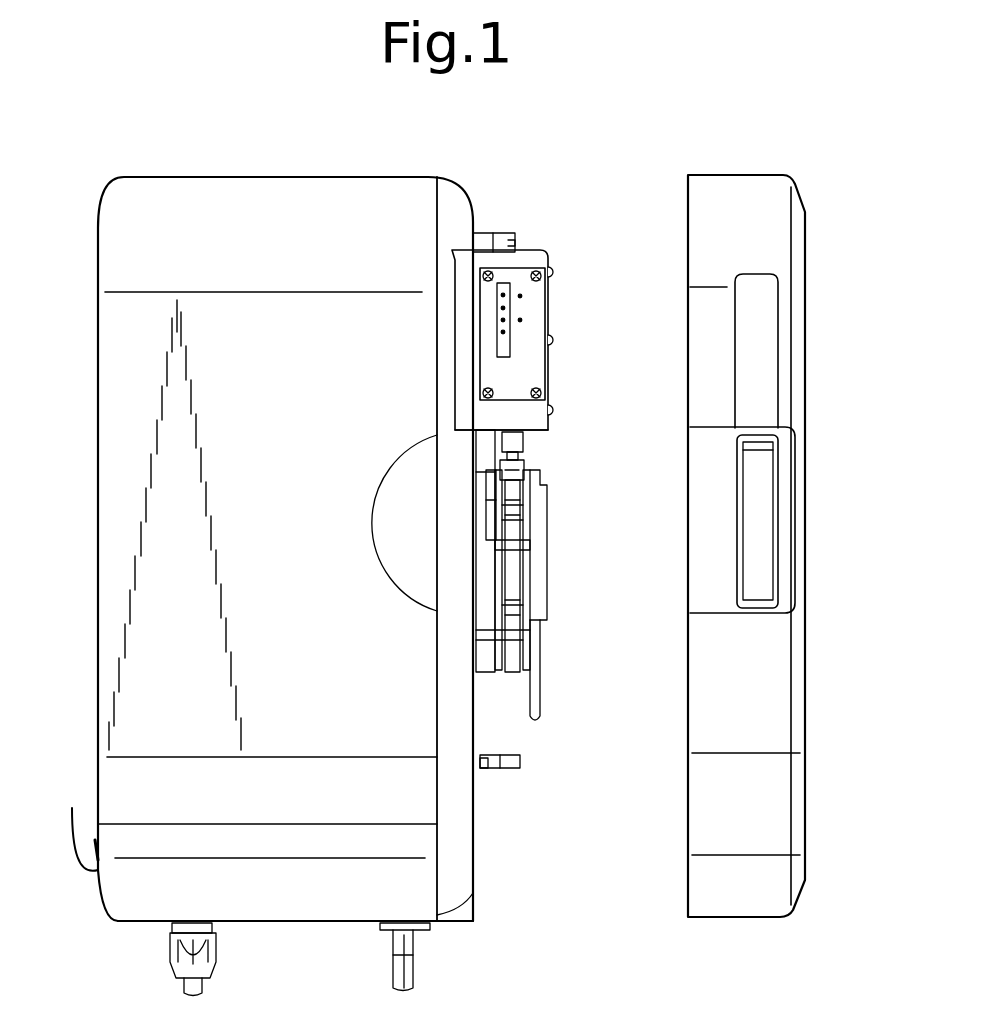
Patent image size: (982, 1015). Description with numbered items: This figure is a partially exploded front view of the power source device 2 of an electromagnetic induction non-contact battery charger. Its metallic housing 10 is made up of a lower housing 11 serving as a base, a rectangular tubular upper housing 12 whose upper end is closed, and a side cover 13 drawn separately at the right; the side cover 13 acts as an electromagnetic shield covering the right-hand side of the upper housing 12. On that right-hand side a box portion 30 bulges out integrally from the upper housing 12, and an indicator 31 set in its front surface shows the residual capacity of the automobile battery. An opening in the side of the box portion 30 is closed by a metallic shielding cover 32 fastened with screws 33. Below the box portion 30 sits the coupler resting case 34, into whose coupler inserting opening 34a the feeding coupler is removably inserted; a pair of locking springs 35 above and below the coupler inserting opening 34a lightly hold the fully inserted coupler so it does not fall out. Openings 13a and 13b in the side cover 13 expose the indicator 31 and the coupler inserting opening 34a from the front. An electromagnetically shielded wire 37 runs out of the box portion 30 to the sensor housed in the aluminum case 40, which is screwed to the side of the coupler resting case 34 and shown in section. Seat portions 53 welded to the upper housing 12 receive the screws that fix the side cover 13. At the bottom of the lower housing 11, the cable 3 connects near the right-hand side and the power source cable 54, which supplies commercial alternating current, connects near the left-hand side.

The power source device 2 is at (468, 176).
The cable 3 is at (413, 970).
The housing 10 is at (341, 177).
The lower housing 11 is at (318, 888).
The upper housing 12 is at (137, 492).
The side cover 13 is at (814, 674).
The opening 13a is at (770, 352).
The opening 13b is at (768, 510).
The box portion 30 is at (532, 248).
The indicator 31 is at (485, 322).
The cover 32 is at (550, 300).
The screws 33 is at (552, 406).
The coupler resting case 34 is at (495, 540).
The coupler inserting opening 34a is at (518, 540).
The locking springs 35 is at (522, 462).
The electromagnetically shielded wire 37 is at (542, 700).
The aluminum case 40 is at (547, 585).
The seat portions 53 is at (496, 233).
The power source cable 54 is at (183, 986).